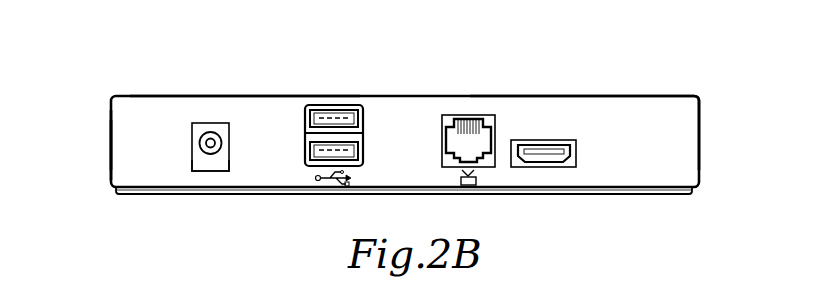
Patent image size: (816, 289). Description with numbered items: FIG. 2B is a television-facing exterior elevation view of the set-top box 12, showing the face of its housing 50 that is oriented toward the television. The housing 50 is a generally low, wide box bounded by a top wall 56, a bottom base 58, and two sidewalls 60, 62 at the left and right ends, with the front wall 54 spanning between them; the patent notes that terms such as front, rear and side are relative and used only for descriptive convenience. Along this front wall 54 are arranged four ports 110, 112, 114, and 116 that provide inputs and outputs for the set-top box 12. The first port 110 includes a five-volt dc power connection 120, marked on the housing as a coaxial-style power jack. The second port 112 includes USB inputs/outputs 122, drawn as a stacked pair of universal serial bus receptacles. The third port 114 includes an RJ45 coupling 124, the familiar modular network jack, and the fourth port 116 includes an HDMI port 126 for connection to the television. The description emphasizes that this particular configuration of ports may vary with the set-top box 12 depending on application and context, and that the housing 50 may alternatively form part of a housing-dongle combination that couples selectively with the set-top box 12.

The set-top box 12 is at (135, 82).
The housing 50 is at (672, 90).
The front wall 54 is at (145, 180).
The top wall 56 is at (178, 94).
The bottom base 58 is at (263, 195).
The sidewall 60 is at (110, 143).
The sidewall 62 is at (700, 143).
The port 110 is at (221, 128).
The port 112 is at (333, 106).
The port 114 is at (472, 118).
The port 116 is at (545, 139).
The 5V dc power connection 120 is at (209, 168).
The USB inputs/outputs 122 is at (315, 163).
The RJ45 coupling 124 is at (485, 160).
The HDMI port 126 is at (569, 168).